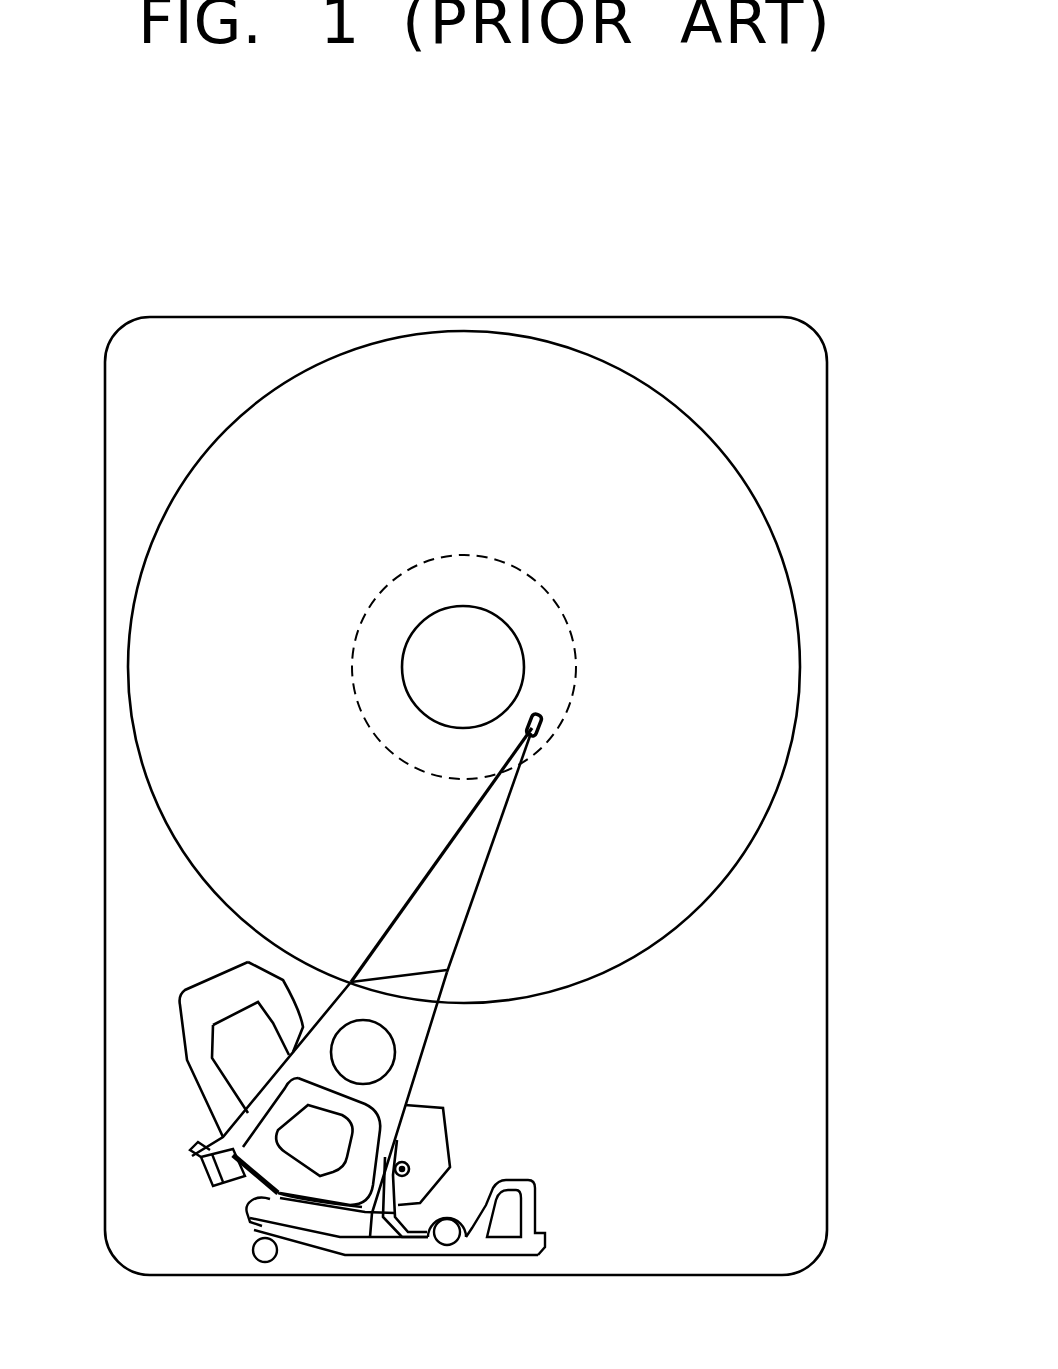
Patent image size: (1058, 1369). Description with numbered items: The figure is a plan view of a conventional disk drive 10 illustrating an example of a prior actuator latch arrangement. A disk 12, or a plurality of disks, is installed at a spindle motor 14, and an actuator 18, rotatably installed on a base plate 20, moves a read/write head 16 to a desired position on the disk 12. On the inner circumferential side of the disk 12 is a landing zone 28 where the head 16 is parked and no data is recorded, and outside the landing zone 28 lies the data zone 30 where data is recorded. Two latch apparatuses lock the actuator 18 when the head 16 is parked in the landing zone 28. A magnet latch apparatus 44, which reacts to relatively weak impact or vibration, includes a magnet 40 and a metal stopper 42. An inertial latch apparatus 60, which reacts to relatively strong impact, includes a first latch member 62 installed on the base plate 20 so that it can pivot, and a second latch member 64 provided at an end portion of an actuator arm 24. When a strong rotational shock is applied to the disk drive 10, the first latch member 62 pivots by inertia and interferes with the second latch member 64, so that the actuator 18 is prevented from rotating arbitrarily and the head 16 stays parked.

The disk drive 10 is at (578, 266).
The disk 12 is at (616, 361).
The spindle motor 14 is at (443, 682).
The read/write head 16 is at (540, 732).
The actuator 18 is at (452, 1053).
The base plate 20 is at (828, 442).
The actuator arm 24 is at (385, 988).
The landing zone 28 is at (545, 624).
The data zone 30 is at (650, 590).
The magnet 40 is at (203, 1156).
The metal stopper 42 is at (218, 1188).
The magnet latch apparatus 44 is at (190, 1173).
The inertial latch apparatus 60 is at (232, 1246).
The first latch member 62 is at (397, 1243).
The second latch member 64 is at (280, 1226).